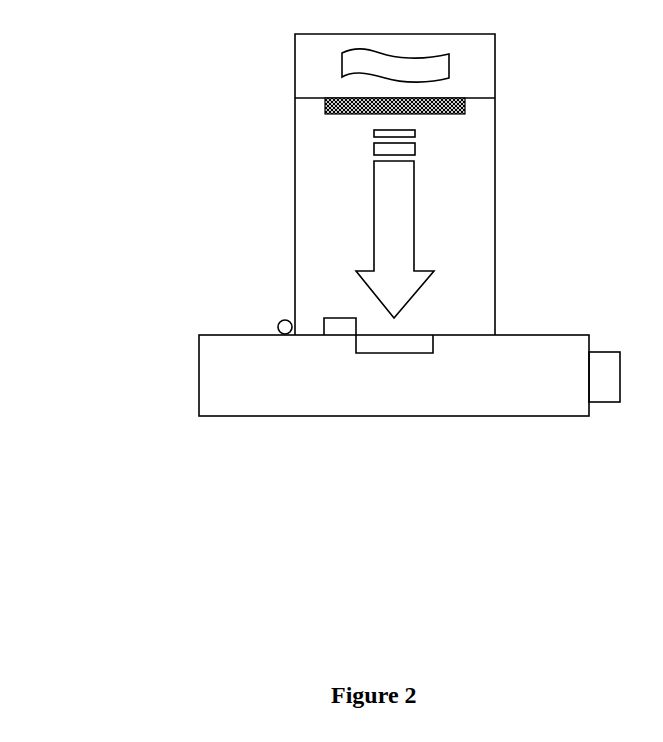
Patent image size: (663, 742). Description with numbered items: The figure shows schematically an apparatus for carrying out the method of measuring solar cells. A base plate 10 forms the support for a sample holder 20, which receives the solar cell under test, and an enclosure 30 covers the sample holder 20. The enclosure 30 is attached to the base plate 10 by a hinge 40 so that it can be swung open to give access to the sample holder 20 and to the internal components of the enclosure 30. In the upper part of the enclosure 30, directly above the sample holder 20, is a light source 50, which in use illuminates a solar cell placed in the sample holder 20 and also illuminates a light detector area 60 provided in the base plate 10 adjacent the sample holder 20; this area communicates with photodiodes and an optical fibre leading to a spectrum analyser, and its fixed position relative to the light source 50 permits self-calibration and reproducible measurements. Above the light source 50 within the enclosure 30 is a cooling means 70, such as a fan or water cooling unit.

The base plate 10 is at (215, 414).
The sample holder 20 is at (388, 355).
The enclosure 30 is at (294, 223).
The hinge 40 is at (277, 318).
The light source 50 is at (378, 113).
The light detector area 60 is at (339, 337).
The cooling means 70 is at (340, 66).